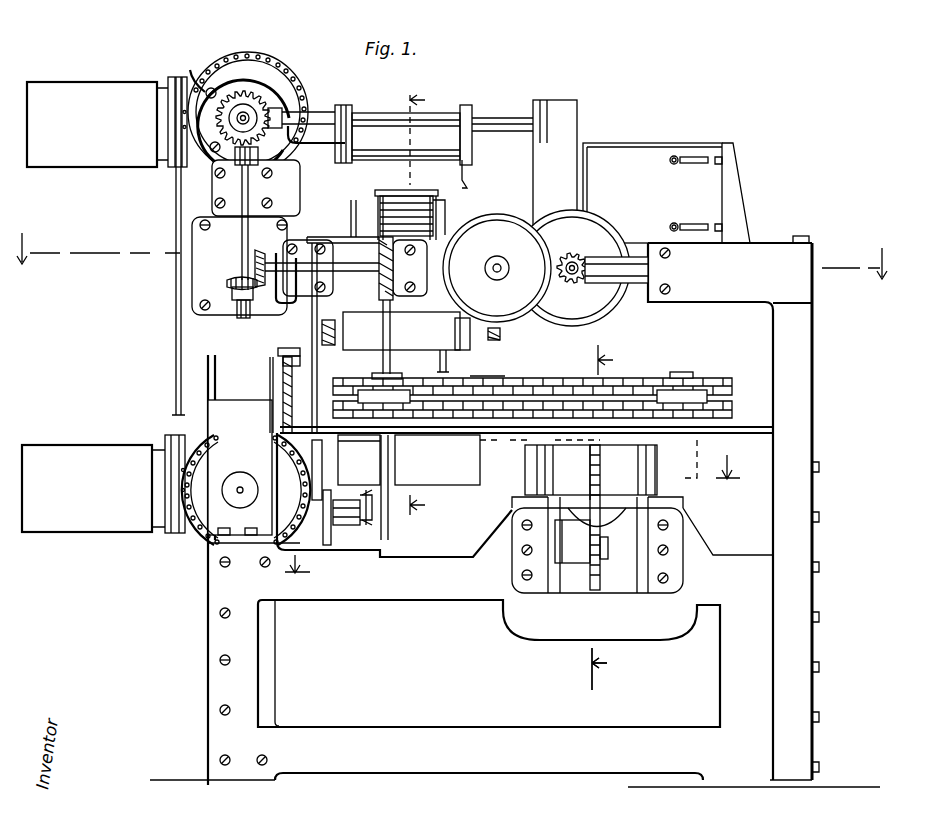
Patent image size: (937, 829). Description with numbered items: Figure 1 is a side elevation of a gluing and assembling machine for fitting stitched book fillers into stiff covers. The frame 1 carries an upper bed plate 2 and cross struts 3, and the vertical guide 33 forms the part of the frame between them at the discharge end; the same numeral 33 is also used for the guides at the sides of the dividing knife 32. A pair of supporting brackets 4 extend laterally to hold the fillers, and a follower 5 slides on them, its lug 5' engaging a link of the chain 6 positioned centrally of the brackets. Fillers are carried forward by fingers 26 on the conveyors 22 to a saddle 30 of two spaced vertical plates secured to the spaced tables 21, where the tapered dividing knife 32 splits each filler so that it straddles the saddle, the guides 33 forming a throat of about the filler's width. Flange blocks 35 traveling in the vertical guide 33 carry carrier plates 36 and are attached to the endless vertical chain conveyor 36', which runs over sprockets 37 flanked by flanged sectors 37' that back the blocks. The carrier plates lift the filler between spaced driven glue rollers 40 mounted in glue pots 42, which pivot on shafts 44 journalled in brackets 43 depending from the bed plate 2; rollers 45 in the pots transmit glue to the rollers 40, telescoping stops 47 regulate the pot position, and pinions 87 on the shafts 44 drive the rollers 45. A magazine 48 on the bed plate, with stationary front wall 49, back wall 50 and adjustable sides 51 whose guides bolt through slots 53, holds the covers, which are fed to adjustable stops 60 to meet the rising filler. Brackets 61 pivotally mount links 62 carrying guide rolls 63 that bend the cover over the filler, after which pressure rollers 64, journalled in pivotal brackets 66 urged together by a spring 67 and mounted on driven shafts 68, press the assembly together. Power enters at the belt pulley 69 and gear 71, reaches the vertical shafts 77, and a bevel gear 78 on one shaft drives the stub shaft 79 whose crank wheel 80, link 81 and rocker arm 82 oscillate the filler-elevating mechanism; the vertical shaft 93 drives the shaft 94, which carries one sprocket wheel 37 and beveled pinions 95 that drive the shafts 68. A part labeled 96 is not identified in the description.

The frame 1 is at (817, 436).
The upper bed plate 2 is at (770, 246).
The cross struts 3 is at (403, 612).
The supporting brackets 4 is at (545, 538).
The follower 5 is at (505, 511).
The lug 5' is at (612, 472).
The chain 6 is at (565, 600).
The spaced tables 21 is at (750, 415).
The conveyors 22 is at (582, 370).
The fingers 26 is at (362, 380).
The saddle 30 is at (440, 468).
The tapered dividing knife 32 is at (591, 470).
The vertical guide 33 is at (205, 345).
The flange blocks 35 is at (172, 113).
The carrier plates 36 is at (95, 307).
The endless vertical chain conveyor 36' is at (266, 86).
The sprockets 37 is at (248, 281).
The flanged sectors 37' is at (172, 310).
The glue rollers 40 is at (576, 260).
The glue pots 42 is at (500, 262).
The spaced brackets 43 is at (300, 310).
The shafts 44 is at (379, 250).
The rollers 45 is at (382, 282).
The stops 47 is at (415, 322).
The magazine 48 is at (640, 142).
The stationary front wall 49 is at (582, 108).
The back wall 50 is at (740, 188).
The adjustable sides 51 is at (652, 193).
The slots 53 is at (693, 163).
The stops 60 is at (355, 200).
The brackets 61 is at (340, 236).
The links 62 is at (400, 216).
The guide rolls 63 is at (447, 190).
The pressure rollers 64 is at (440, 150).
The pivotal brackets 66 is at (350, 105).
The spring 67 is at (472, 185).
The driven shafts 68 is at (432, 115).
The belt pulley 69 is at (625, 305).
The gear 71 is at (510, 215).
The vertical shafts 77 is at (415, 360).
The bevel gear 78 is at (392, 480).
The stub shaft 79 is at (312, 512).
The crank wheel 80 is at (325, 548).
The link 81 is at (332, 478).
The rocker arm 82 is at (335, 455).
The pinions 87 is at (505, 340).
The vertical shaft 93 is at (252, 192).
The shaft 94 is at (285, 105).
The beveled pinions 95 is at (262, 160).
The bevel gear 96 is at (236, 276).